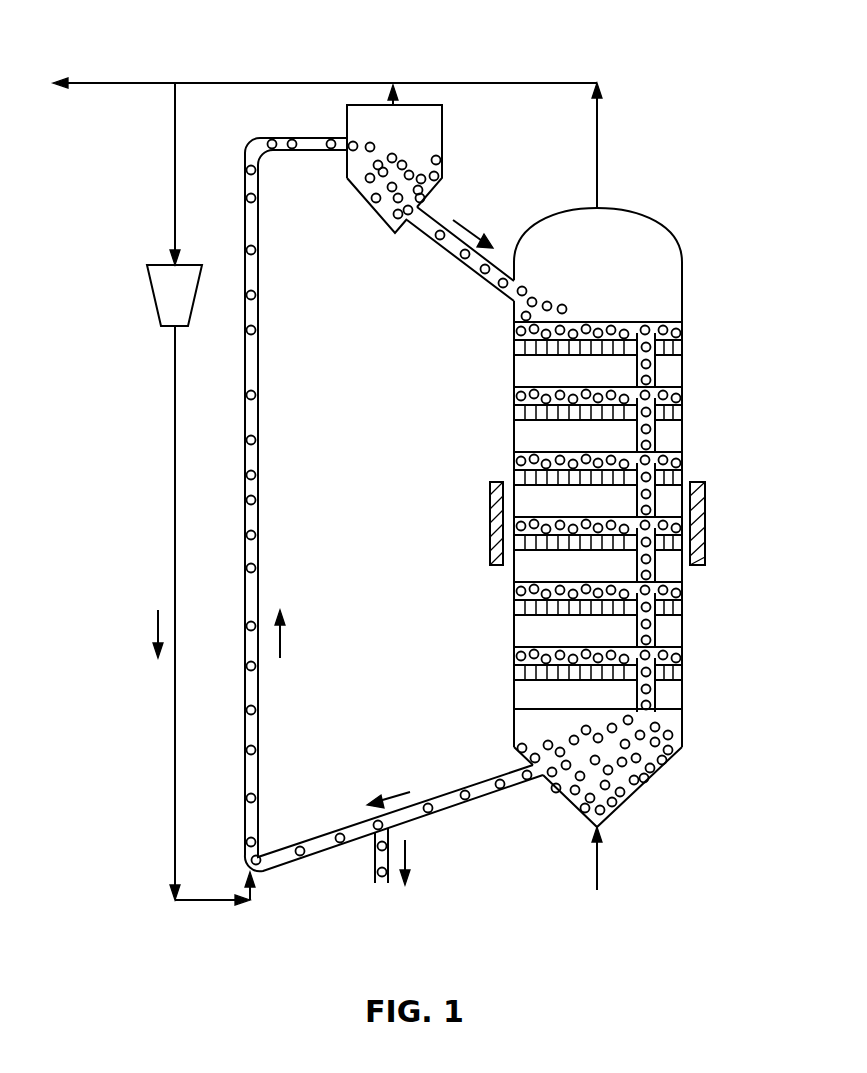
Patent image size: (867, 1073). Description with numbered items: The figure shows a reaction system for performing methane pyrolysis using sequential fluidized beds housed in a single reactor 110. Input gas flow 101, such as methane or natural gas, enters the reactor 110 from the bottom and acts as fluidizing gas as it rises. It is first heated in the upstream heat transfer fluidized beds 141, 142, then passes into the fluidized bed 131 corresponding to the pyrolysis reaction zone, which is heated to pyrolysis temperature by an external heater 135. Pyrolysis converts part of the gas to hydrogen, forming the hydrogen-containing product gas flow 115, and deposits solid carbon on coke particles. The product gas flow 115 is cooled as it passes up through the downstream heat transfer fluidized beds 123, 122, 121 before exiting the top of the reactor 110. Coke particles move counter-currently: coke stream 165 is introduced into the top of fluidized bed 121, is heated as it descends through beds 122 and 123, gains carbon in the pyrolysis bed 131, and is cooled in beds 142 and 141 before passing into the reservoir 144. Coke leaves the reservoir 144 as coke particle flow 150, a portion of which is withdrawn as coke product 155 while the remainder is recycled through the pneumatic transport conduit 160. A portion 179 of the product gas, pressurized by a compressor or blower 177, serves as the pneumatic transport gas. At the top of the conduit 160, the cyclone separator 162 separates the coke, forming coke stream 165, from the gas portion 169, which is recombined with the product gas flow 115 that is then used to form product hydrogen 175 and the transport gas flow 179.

The input gas flow 101 is at (595, 862).
The reactor 110 is at (681, 243).
The hydrogen-containing product gas flow 115 is at (598, 147).
The downstream heat transfer fluidized bed 121 is at (683, 340).
The downstream heat transfer fluidized bed 122 is at (683, 405).
The downstream heat transfer fluidized bed 123 is at (683, 470).
The fluidized bed 131 is at (492, 558).
The external heater 135 is at (706, 527).
The upstream heat transfer fluidized bed 141 is at (683, 665).
The upstream heat transfer fluidized bed 142 is at (683, 600).
The reservoir 144 is at (637, 793).
The coke particle flow 150 is at (342, 848).
The coke product 155 is at (388, 880).
The pneumatic transport conduit 160 is at (259, 452).
The cyclone separator 162 is at (373, 208).
The coke stream 165 is at (452, 255).
The portion of hydrogen-containing product gas flow 169 is at (398, 97).
The product hydrogen 175 is at (106, 83).
The compressor or blower 177 is at (152, 290).
The pneumatic transport gas flow 179 is at (173, 580).